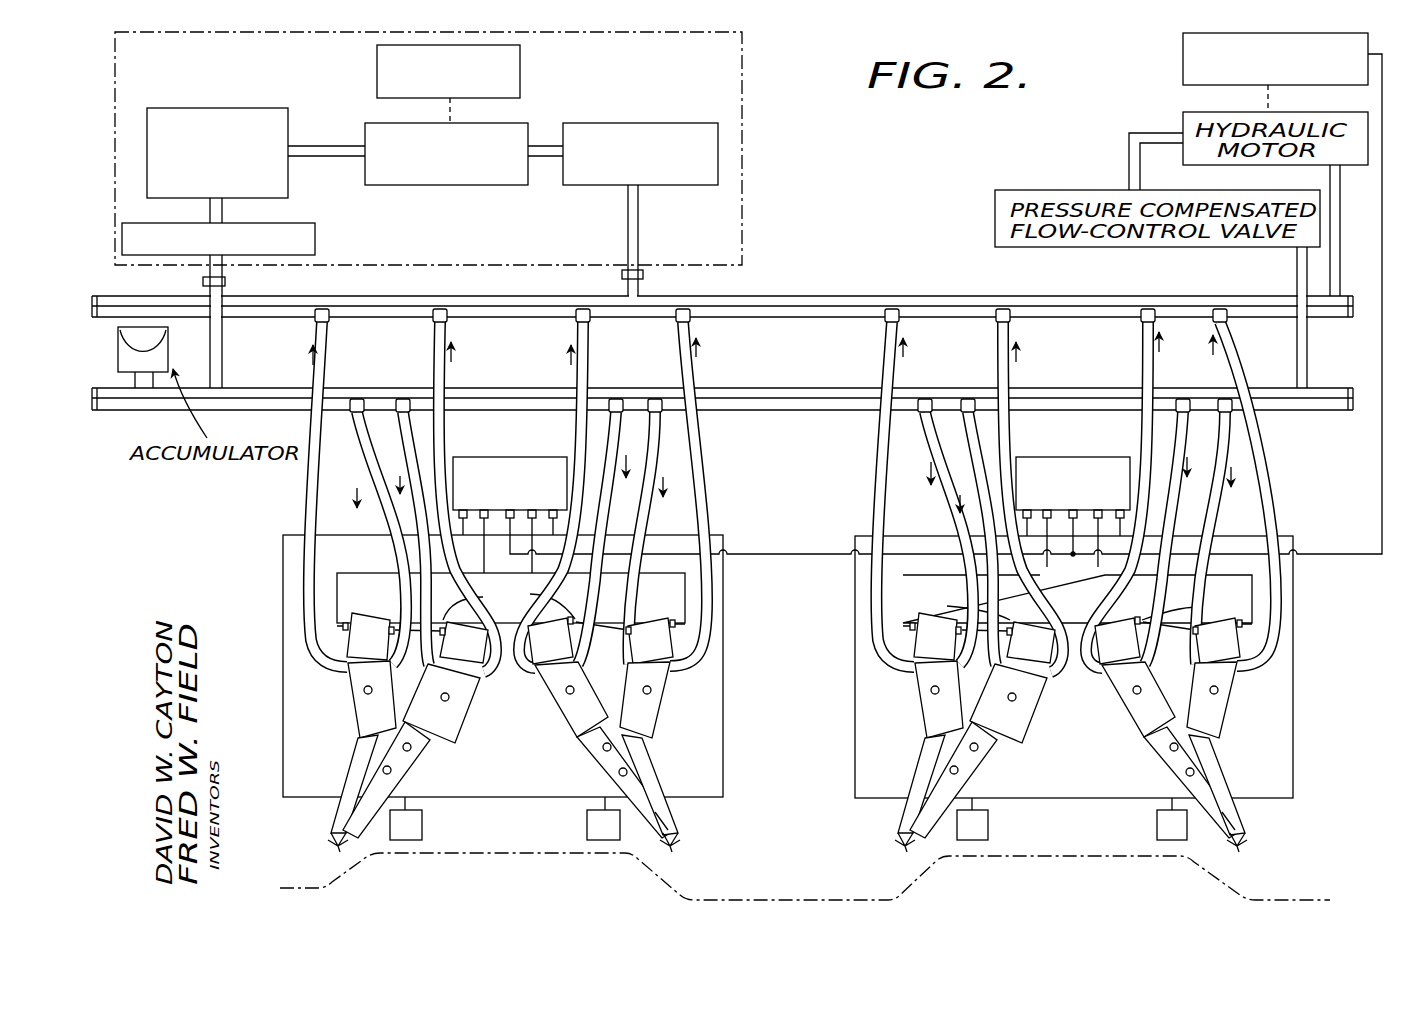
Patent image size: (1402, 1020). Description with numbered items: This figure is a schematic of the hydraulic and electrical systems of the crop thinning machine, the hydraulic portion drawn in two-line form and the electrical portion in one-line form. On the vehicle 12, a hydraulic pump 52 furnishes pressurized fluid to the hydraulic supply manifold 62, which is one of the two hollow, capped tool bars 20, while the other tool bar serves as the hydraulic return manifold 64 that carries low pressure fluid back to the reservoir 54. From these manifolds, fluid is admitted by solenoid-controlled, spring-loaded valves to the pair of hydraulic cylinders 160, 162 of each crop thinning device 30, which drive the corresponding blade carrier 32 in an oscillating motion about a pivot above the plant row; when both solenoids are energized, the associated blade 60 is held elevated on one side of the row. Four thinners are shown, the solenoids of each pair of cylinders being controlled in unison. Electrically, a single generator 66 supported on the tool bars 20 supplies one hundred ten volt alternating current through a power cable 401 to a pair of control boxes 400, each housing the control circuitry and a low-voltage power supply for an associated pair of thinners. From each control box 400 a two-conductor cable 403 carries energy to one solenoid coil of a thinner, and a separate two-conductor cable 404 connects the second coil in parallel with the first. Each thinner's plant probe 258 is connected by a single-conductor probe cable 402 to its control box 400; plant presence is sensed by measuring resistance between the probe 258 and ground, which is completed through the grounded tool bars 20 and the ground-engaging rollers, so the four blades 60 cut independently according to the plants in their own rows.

The vehicle 12 is at (428, 148).
The tool bars 20 is at (1099, 297).
The crop thinning device 30 is at (565, 746).
The blade carrier 32 is at (667, 822).
The hydraulic pump 52 is at (488, 186).
The reservoir 54 is at (622, 123).
The blade 60 is at (674, 848).
The hydraulic supply manifold 62 is at (705, 390).
The hydraulic return manifold 64 is at (790, 297).
The generator 66 is at (1183, 45).
The hydraulic cylinder 160 is at (562, 717).
The hydraulic cylinder 162 is at (367, 712).
The plant probe 258 is at (402, 827).
The control box 400 is at (791, 515).
The power cable 401 is at (1382, 512).
The probe cable 402 is at (285, 545).
The two-conductor cable 403 is at (353, 573).
The two-conductor cable 404 is at (794, 604).